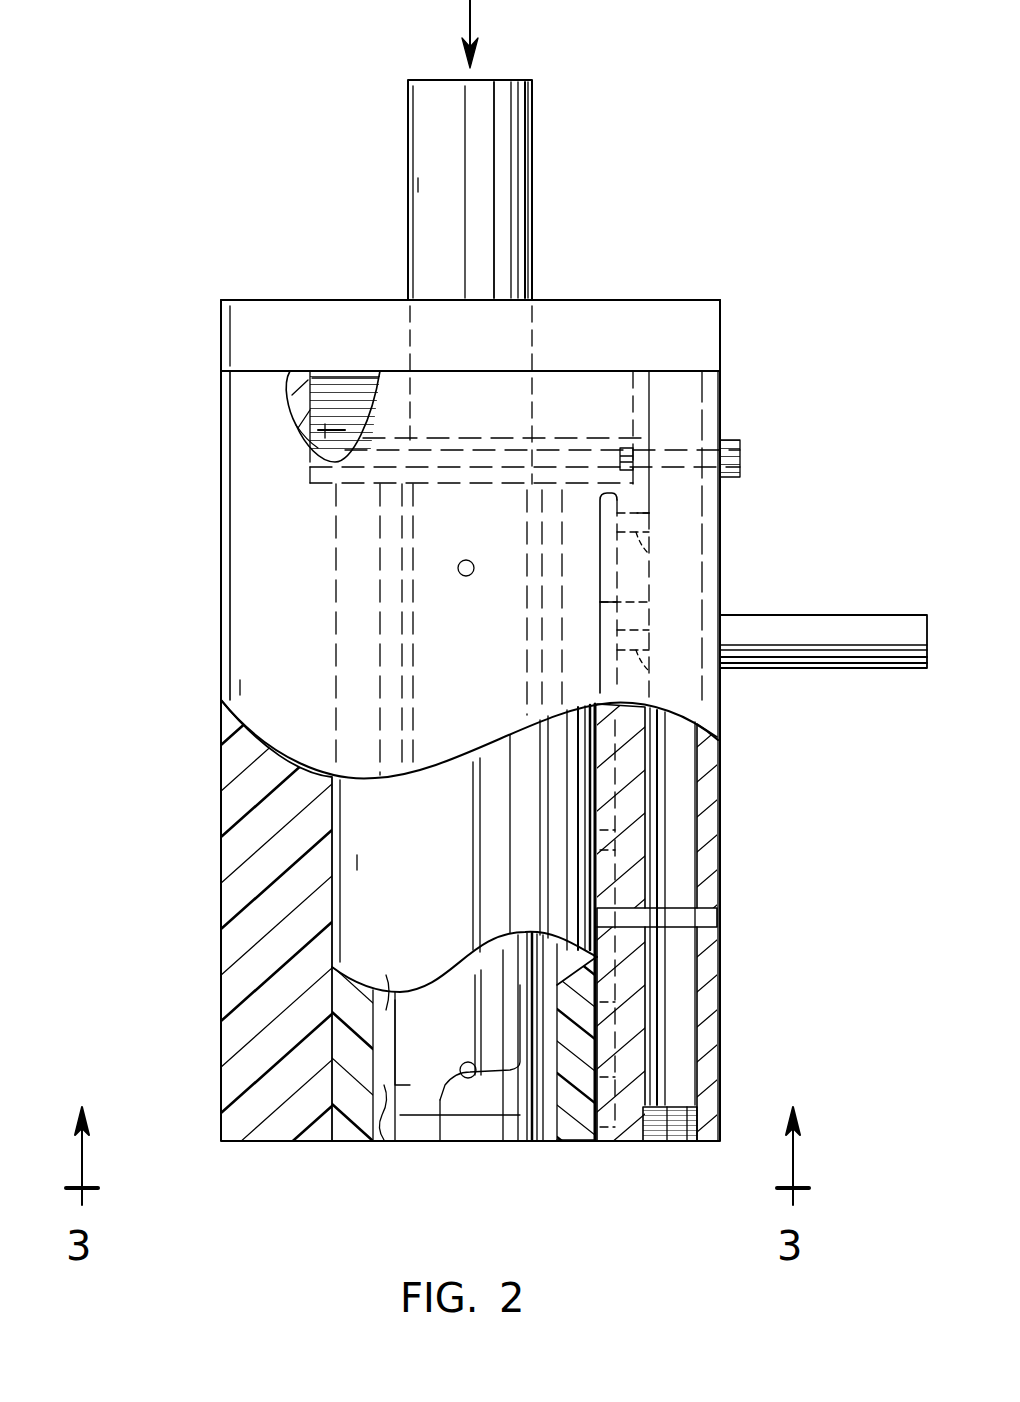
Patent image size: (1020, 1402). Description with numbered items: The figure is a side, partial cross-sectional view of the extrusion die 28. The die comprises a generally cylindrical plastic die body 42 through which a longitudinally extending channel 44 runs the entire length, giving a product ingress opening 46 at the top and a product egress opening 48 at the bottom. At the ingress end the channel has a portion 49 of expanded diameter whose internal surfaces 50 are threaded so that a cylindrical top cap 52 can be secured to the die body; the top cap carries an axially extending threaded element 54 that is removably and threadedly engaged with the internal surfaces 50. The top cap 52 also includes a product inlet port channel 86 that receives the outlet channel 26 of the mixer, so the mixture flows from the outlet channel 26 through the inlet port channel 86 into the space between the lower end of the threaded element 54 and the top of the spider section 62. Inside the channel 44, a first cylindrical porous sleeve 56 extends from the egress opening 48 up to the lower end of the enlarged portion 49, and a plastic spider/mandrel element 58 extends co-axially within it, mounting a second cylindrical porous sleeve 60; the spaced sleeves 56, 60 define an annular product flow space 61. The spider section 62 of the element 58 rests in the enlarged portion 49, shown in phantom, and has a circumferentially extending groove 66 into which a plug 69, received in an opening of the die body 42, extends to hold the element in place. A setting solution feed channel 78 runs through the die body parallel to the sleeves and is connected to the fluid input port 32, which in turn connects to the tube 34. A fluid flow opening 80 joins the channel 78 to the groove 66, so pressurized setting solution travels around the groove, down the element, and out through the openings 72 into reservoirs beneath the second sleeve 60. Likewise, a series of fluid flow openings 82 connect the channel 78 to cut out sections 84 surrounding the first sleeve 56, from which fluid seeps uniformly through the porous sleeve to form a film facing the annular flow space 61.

The outlet channel 26 is at (533, 188).
The extrusion die 28 is at (212, 406).
The fluid input port 32 is at (716, 606).
The tube 34 is at (805, 615).
The die body 42 is at (232, 648).
The longitudinally extending channel 44 is at (590, 1145).
The product ingress opening 46 is at (636, 372).
The product egress opening 48 is at (326, 1143).
The portion of expanded diameter 49 is at (628, 386).
The internal surfaces 50 is at (326, 375).
The top cap 52 is at (652, 300).
The threaded element 54 is at (340, 400).
The first cylindrical porous sleeve 56 is at (370, 826).
The spider/mandrel element 58 is at (520, 1145).
The second cylindrical porous sleeve 60 is at (372, 1148).
The annular product flow space 61 is at (548, 665).
The spider section 62 is at (300, 440).
The circumferentially extending groove 66 is at (508, 470).
The plug 69 is at (742, 462).
The openings 72 is at (462, 572).
The setting solution feed channel 78 is at (695, 845).
The fluid flow opening 80 is at (633, 452).
The fluid flow openings 82 is at (632, 1060).
The cut out sections 84 is at (612, 612).
The product inlet port channel 86 is at (530, 320).